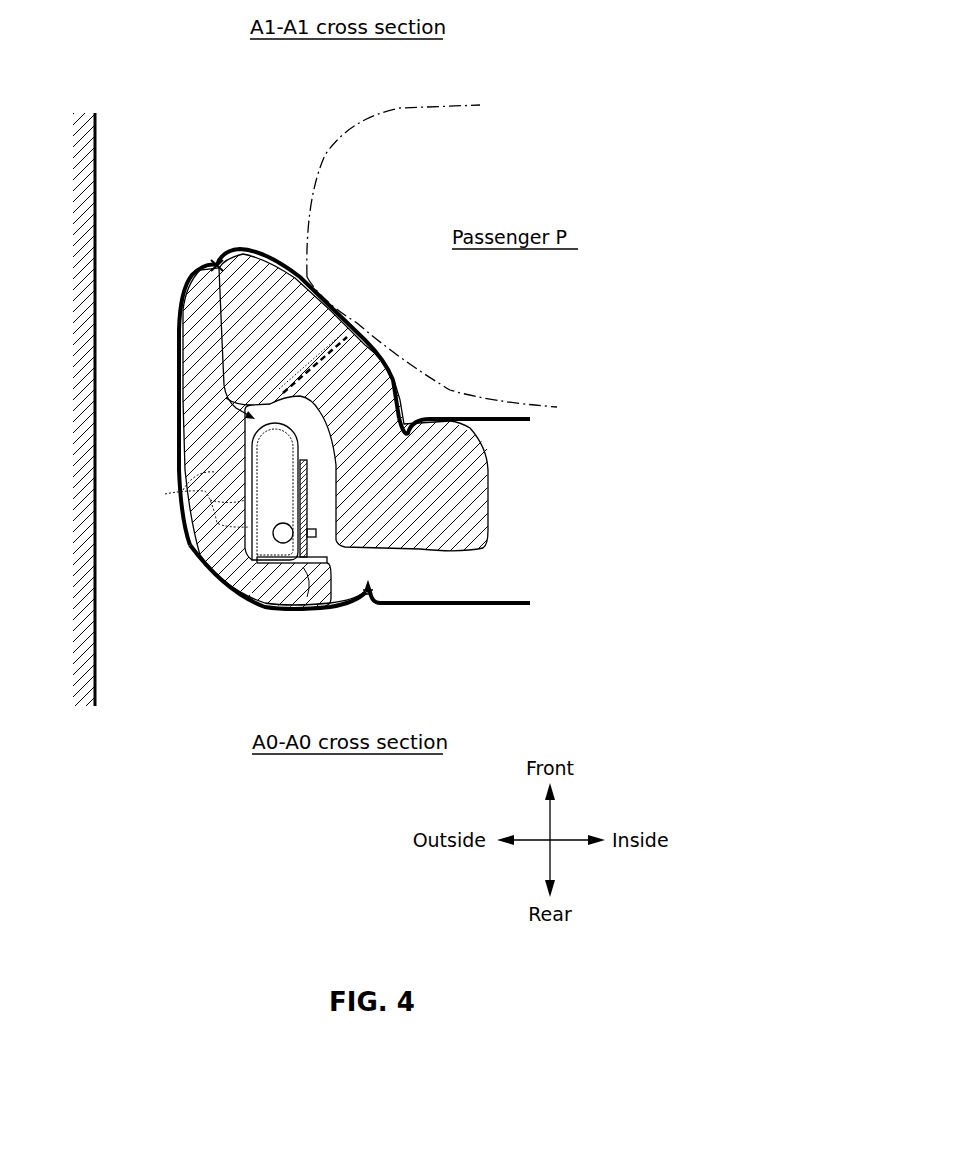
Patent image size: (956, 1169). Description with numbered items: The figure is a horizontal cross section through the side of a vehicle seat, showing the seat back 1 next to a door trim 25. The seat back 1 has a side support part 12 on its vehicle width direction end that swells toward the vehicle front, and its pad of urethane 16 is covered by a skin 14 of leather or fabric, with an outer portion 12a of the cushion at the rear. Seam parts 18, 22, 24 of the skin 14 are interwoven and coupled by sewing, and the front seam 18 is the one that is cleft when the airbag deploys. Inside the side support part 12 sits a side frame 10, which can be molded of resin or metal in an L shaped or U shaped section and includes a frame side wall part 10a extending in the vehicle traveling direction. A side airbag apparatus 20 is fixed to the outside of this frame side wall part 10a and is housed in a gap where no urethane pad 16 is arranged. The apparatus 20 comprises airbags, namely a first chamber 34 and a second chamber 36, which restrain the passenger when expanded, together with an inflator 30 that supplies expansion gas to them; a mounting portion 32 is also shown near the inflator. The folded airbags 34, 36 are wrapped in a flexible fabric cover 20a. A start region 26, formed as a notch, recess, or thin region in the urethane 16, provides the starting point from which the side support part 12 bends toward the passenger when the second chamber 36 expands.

The seat back 1 is at (515, 567).
The side frame 10 is at (323, 560).
The frame side wall part 10a is at (310, 500).
The side support part 12 is at (334, 287).
The rear portion of cushion 12a is at (273, 610).
The skin 14 is at (250, 250).
The urethane pad 16 is at (174, 318).
The front seam 18 is at (213, 265).
The side airbag apparatus 20 is at (225, 426).
The flexible cover 20a is at (250, 443).
The seam part 22 is at (408, 422).
The seam part 24 is at (368, 600).
The door trim 25 is at (98, 125).
The start region 26 is at (350, 332).
The inflator 30 is at (258, 573).
The pad edge 32 is at (308, 598).
The first chamber 34 is at (179, 499).
The second chamber 36 is at (179, 499).